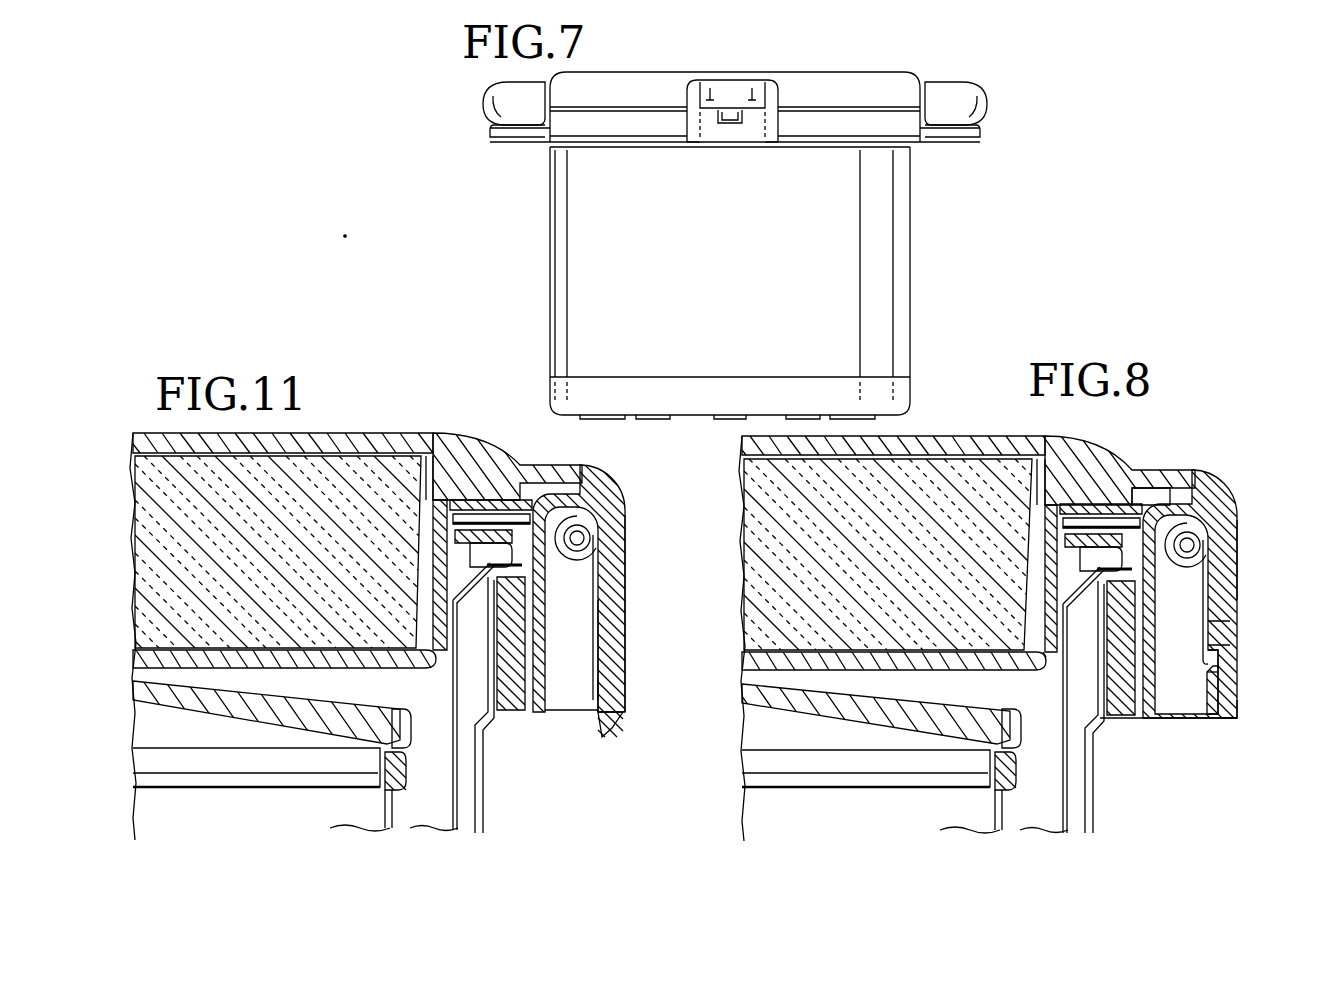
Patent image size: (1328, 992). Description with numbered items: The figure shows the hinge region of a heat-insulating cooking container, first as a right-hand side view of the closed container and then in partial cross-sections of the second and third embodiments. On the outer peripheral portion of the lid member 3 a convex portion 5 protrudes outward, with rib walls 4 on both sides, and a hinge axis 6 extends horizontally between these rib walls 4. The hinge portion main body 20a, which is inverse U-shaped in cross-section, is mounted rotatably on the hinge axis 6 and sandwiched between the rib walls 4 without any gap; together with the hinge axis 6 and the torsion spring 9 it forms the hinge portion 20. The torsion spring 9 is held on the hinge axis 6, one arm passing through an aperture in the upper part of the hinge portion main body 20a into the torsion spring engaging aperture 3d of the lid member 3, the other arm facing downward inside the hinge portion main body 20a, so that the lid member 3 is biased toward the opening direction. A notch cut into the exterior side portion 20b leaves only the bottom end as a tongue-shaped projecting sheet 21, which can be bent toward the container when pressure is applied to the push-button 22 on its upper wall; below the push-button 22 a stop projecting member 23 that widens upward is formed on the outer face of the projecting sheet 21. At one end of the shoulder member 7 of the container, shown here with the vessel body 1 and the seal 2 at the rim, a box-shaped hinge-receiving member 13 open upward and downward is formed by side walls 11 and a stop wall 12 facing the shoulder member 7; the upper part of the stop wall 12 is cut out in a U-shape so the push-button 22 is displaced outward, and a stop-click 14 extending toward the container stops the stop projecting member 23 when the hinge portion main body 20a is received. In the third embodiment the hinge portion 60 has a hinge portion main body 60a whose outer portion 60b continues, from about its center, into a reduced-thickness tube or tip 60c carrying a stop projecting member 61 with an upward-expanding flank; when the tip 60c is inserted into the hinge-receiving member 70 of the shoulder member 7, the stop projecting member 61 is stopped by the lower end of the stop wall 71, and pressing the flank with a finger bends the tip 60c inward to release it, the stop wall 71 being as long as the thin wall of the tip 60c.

In FIG. 7, the vessel body 1 is at (917, 240).
In FIG. 11, the vessel body 1 is at (488, 813).
In FIG. 8, the vessel body 1 is at (1090, 817).
In FIG. 11, the seal gasket 2 is at (412, 775).
In FIG. 8, the seal gasket 2 is at (1014, 801).
In FIG. 7, the lid member 3 is at (801, 70).
In FIG. 11, the lid member 3 is at (325, 431).
In FIG. 8, the lid member 3 is at (935, 436).
In FIG. 11, the torsion spring engaging aperture 3d is at (455, 498).
In FIG. 8, the torsion spring engaging aperture 3d is at (1093, 508).
In FIG. 7, the rib walls 4 is at (683, 93).
In FIG. 8, the rib walls 4 is at (1143, 498).
In FIG. 11, the convex portion 5 is at (503, 452).
In FIG. 8, the convex portion 5 is at (1172, 468).
In FIG. 11, the hinge axis 6 is at (583, 532).
In FIG. 8, the hinge axis 6 is at (1238, 550).
In FIG. 11, the shoulder member 7 is at (513, 712).
In FIG. 8, the shoulder member 7 is at (1123, 720).
In FIG. 11, the torsion spring 9 is at (600, 537).
In FIG. 8, the torsion spring 9 is at (1192, 542).
In FIG. 7, the side walls 11 is at (687, 129).
In FIG. 7, the stop wall 12 is at (770, 143).
In FIG. 8, the stop wall 12 is at (1237, 697).
In FIG. 7, the hinge-receiving member 13 is at (692, 150).
In FIG. 8, the hinge-receiving member 13 is at (1239, 720).
In FIG. 8, the stop-click 14 is at (1234, 662).
In FIG. 7, the hinge portion 20 is at (729, 70).
In FIG. 8, the hinge portion 20 is at (1218, 484).
In FIG. 8, the hinge portion main body 20a is at (1240, 563).
In FIG. 7, the exterior side portion 20b is at (720, 92).
In FIG. 8, the exterior side portion 20b is at (1236, 592).
In FIG. 7, the projecting sheet 21 is at (727, 125).
In FIG. 8, the projecting sheet 21 is at (1210, 690).
In FIG. 7, the push-button 22 is at (733, 125).
In FIG. 8, the push-button 22 is at (1237, 634).
In FIG. 8, the stop projecting member 23 is at (1208, 678).
In FIG. 11, the hinge portion 60 is at (627, 497).
In FIG. 11, the hinge portion main body 60a is at (628, 548).
In FIG. 11, the outer portion 60b is at (627, 570).
In FIG. 11, the tip 60c is at (597, 692).
In FIG. 11, the stop projecting member 61 is at (613, 725).
In FIG. 11, the hinge-receiving member 70 is at (630, 650).
In FIG. 11, the stop wall 71 is at (623, 688).